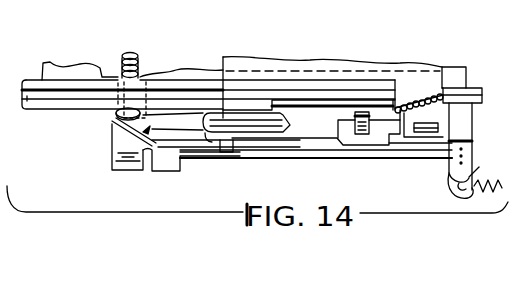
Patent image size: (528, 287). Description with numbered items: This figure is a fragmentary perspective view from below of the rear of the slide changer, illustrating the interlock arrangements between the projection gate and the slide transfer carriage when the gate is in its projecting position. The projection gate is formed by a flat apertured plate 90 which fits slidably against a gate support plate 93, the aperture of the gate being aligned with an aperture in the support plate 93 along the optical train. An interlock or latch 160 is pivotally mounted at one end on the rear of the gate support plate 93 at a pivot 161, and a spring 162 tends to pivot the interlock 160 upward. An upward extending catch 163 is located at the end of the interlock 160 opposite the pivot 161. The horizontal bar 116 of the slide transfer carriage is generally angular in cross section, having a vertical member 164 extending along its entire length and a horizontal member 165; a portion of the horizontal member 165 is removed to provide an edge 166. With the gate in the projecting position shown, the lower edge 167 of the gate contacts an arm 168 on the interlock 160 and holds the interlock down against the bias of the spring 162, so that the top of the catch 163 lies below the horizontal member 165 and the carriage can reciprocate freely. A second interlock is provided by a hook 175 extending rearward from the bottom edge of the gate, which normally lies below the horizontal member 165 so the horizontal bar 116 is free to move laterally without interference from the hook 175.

The apertured plate 90 is at (407, 66).
The gate support plate 93 is at (310, 149).
The horizontal bar 116 is at (191, 84).
The interlock 160 is at (113, 141).
The pivot 161 is at (113, 112).
The spring 162 is at (122, 58).
The catch 163 is at (284, 117).
The vertical member 164 is at (359, 87).
The horizontal member 165 is at (241, 102).
The edge 166 is at (285, 101).
The lower edge 167 is at (334, 146).
The arm 168 is at (223, 153).
The hook 175 is at (367, 128).